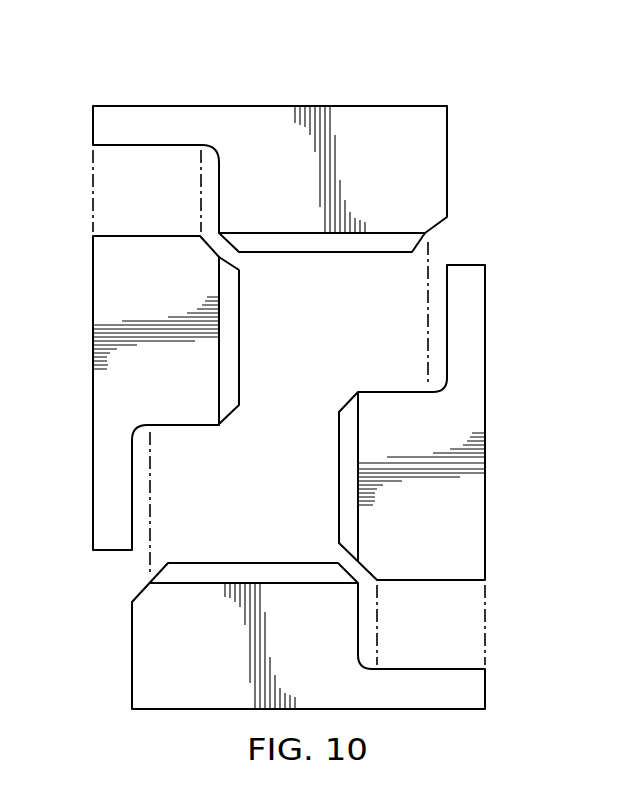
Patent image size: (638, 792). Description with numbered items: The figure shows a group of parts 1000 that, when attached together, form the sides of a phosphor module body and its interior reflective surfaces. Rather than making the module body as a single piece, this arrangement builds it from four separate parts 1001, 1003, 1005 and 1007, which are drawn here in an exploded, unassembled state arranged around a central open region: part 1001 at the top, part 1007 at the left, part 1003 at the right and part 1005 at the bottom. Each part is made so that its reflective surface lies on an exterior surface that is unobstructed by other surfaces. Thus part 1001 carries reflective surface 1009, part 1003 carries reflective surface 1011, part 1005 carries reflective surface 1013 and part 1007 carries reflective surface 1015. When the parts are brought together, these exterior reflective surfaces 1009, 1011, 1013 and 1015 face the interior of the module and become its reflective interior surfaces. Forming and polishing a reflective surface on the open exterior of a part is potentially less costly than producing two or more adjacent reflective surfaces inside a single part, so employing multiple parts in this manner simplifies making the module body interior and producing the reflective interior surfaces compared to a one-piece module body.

The group of parts 1000 is at (150, 70).
The part 1001 is at (270, 182).
The part 1003 is at (373, 453).
The part 1005 is at (308, 637).
The part 1007 is at (167, 405).
The reflective surface 1009 is at (325, 243).
The reflective surface 1011 is at (347, 475).
The reflective surface 1013 is at (253, 572).
The reflective surface 1015 is at (230, 340).